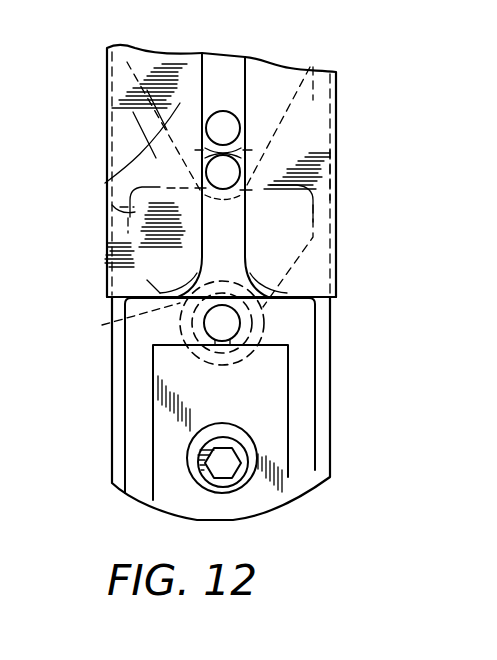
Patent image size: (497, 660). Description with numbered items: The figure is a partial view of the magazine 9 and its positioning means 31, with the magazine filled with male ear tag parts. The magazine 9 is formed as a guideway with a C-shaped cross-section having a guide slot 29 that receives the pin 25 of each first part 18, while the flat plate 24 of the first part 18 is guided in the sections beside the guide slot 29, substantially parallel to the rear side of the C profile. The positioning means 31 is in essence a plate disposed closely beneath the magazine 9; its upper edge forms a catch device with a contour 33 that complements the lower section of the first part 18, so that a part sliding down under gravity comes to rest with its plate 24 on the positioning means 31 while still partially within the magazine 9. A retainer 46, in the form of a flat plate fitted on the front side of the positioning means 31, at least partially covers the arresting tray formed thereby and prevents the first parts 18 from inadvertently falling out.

The guide slot 29 is at (227, 78).
The pin 25 is at (228, 172).
The first part 18 is at (112, 205).
The magazine 9 is at (336, 167).
The flat plate 24 is at (336, 234).
The contour 33 is at (102, 325).
The positioning means 31 is at (297, 328).
The retainer 46 is at (270, 417).